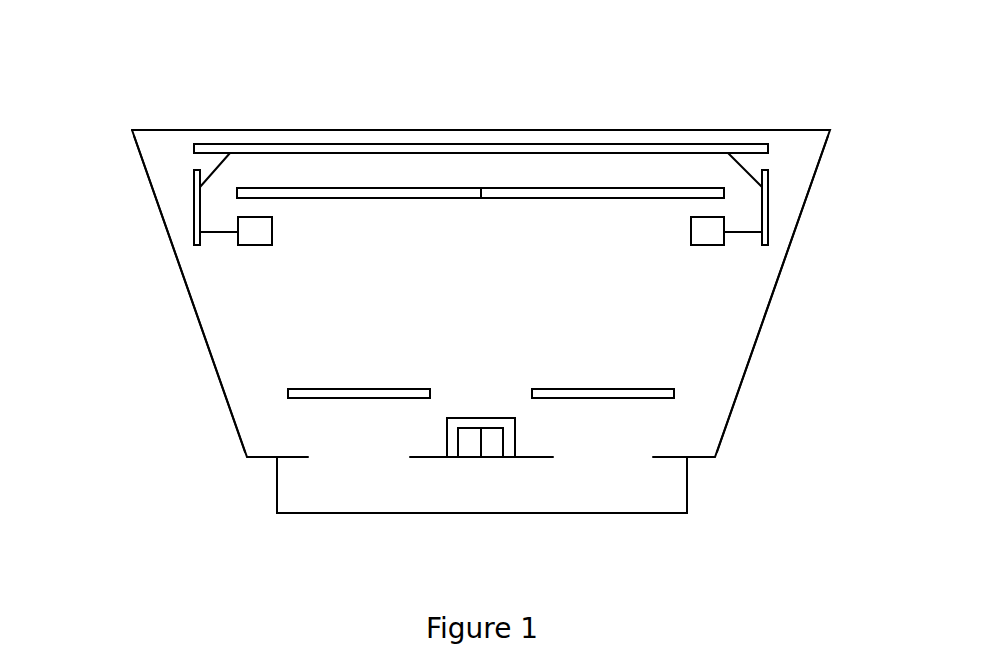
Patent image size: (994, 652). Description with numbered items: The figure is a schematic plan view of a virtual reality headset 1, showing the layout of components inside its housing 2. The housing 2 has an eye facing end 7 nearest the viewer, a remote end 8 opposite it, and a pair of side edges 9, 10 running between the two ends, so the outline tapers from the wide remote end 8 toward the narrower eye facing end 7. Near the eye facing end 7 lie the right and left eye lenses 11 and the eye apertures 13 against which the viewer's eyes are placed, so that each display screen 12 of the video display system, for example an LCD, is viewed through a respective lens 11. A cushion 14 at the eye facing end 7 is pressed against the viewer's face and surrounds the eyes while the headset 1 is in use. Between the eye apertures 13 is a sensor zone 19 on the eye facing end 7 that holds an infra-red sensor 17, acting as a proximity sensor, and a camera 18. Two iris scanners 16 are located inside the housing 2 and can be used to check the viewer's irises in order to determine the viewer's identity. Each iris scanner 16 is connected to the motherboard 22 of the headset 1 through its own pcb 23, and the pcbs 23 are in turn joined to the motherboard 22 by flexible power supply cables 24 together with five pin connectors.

The virtual reality (VR) headset 1 is at (172, 100).
The housing 2 is at (831, 130).
The eye facing end 7 is at (702, 457).
The remote end 8 is at (742, 130).
The side edge 9 is at (197, 317).
The side edge 10 is at (763, 323).
The eye lens 11 is at (288, 393).
The display screen 12 is at (335, 188).
The eye aperture 13 is at (356, 458).
The cushion 14 is at (275, 503).
The iris scanner 16 is at (235, 240).
The infra-red (IR) sensor 17 is at (470, 457).
The camera 18 is at (492, 457).
The sensor zone 19 is at (513, 438).
The motherboard 22 is at (578, 144).
The pcb 23 is at (193, 209).
The flexible power supply cable 24 is at (218, 165).